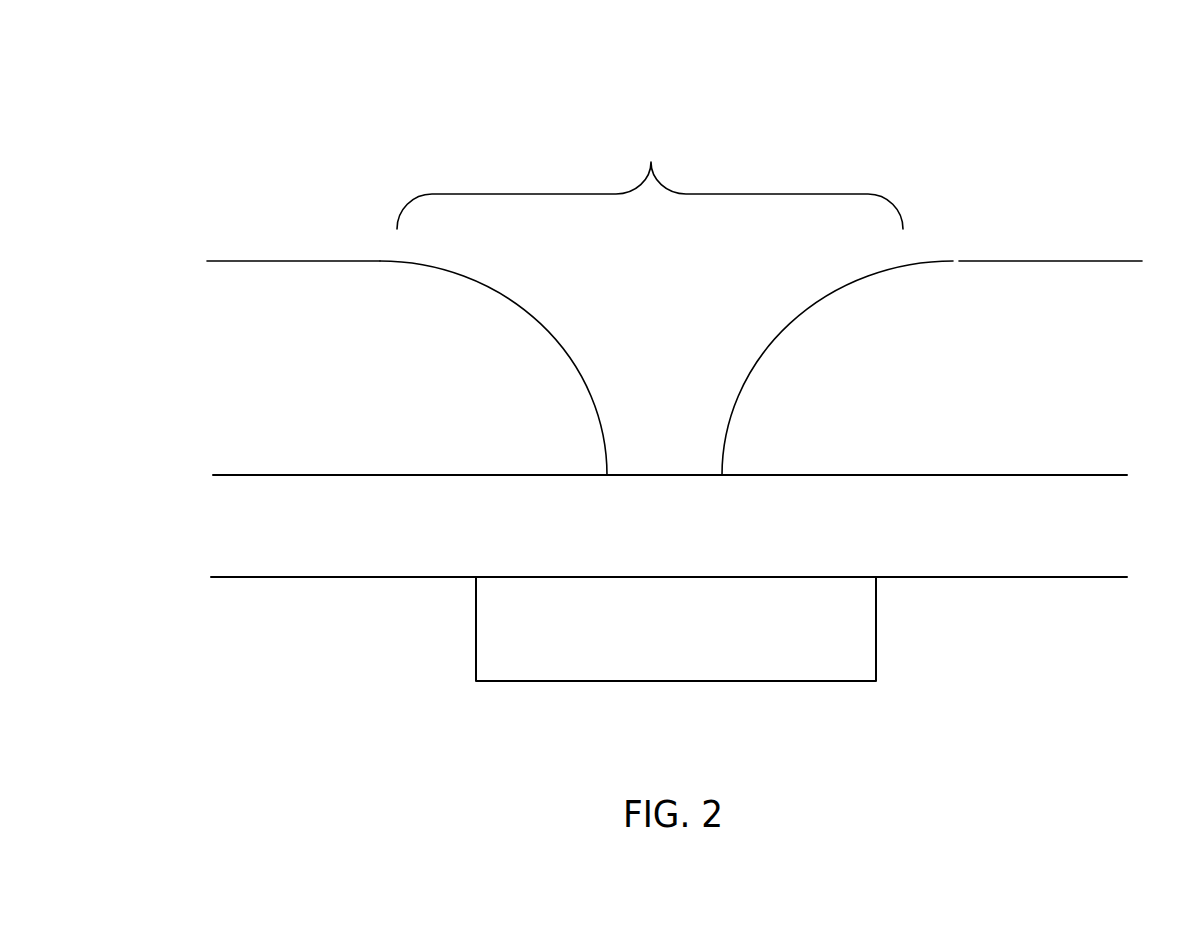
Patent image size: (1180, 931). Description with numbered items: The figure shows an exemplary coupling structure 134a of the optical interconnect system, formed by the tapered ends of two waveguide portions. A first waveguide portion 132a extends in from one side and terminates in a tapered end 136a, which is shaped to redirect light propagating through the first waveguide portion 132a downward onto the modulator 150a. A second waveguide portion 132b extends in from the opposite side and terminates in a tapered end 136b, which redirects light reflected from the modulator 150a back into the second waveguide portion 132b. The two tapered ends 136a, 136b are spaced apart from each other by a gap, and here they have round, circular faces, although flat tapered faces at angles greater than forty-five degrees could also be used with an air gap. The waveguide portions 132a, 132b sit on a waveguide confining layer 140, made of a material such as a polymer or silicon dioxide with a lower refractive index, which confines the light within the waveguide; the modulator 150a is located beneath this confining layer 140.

The first waveguide portion 132a is at (232, 260).
The second waveguide portion 132b is at (1078, 258).
The coupling structure 134a is at (651, 162).
The tapered end of first waveguide portion 136a is at (515, 307).
The tapered end of second waveguide portion 136b is at (797, 307).
The waveguide confining layer 140 is at (1053, 547).
The modulator 150a is at (703, 644).